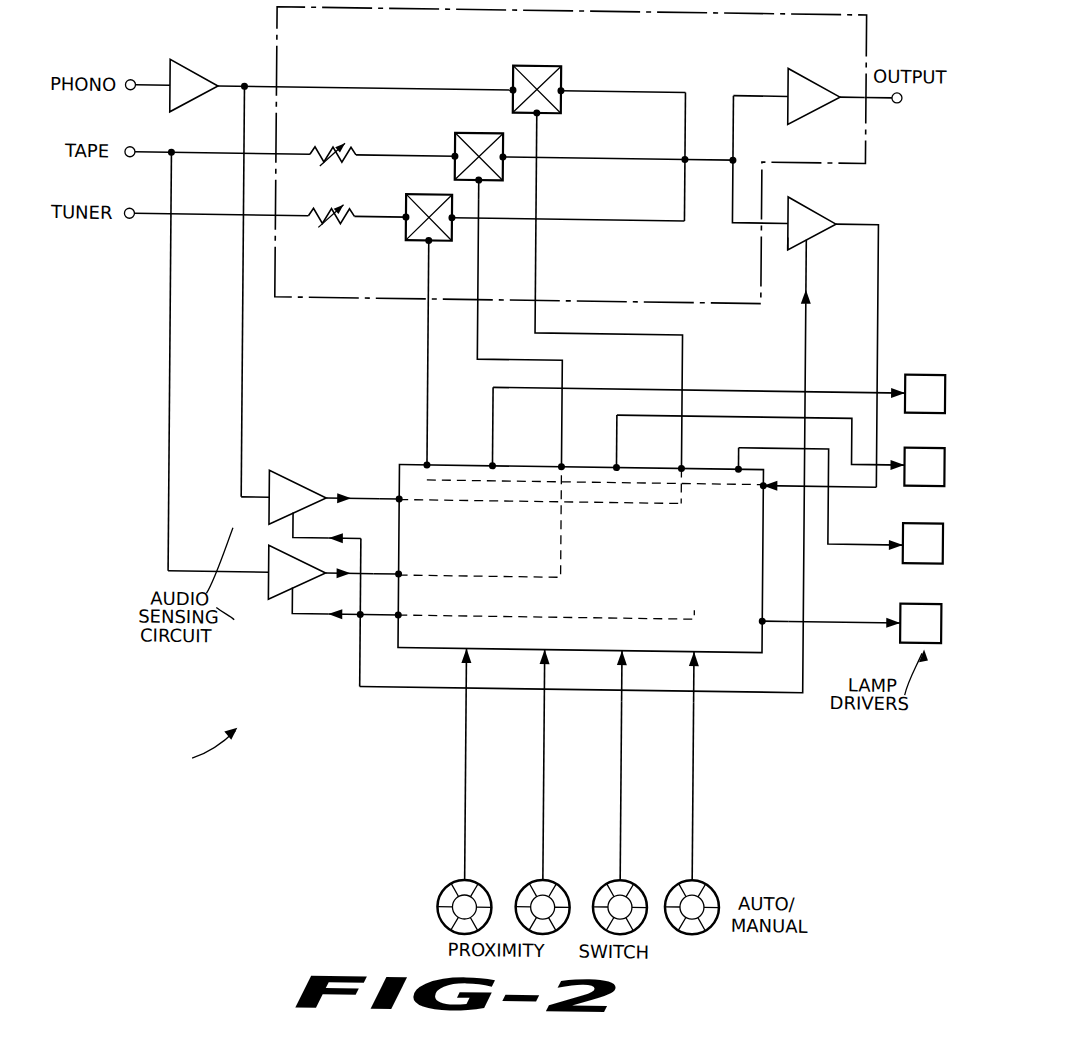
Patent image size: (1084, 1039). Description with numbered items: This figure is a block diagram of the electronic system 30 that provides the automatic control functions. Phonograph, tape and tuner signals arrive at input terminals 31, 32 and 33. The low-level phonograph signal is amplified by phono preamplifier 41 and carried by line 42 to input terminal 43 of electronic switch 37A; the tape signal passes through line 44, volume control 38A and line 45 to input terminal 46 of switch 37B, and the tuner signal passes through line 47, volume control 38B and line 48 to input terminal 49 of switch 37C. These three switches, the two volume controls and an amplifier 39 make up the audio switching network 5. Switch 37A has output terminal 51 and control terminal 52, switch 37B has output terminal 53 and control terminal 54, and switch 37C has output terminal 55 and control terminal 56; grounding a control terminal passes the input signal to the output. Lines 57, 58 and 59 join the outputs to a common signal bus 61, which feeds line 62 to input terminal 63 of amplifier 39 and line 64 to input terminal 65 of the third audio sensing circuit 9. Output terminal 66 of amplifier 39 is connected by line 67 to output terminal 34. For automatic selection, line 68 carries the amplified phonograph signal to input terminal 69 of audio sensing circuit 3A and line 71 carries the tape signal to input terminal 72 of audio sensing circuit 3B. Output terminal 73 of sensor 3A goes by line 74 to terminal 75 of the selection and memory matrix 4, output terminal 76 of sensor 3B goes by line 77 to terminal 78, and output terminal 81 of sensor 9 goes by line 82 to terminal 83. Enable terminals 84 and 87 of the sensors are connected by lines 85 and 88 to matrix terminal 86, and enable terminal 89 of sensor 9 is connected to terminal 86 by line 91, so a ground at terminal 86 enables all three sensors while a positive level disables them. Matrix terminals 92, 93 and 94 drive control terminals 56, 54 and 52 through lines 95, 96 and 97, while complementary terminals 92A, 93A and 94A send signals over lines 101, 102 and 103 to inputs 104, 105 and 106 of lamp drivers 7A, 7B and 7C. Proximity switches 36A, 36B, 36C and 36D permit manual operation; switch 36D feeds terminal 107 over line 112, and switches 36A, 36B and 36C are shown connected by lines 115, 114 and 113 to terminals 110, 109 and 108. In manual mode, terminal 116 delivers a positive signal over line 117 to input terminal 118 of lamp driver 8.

The electronic system 30 is at (198, 749).
The PHONO input terminal 31 is at (131, 86).
The TAPE input terminal 32 is at (146, 146).
The TUNER input terminal 33 is at (146, 202).
The output terminal 34 is at (896, 98).
The audio sensing circuit 3A is at (268, 519).
The audio sensing circuit 3B is at (269, 602).
The selection and memory matrix 4 is at (734, 505).
The audio switching network 5 is at (316, 44).
The third audio sensing circuit 9 is at (867, 176).
The proximity switch 36A is at (488, 889).
The proximity switch 36B is at (565, 888).
The proximity switch 36C is at (642, 887).
The proximity switch 36D is at (714, 886).
The electronic switch 37A is at (552, 66).
The electronic switch 37B is at (495, 124).
The electronic switch 37C is at (440, 190).
The volume control 38A is at (318, 152).
The volume control 38B is at (318, 212).
The amplifier 39 is at (818, 82).
The phono preamplifier 41 is at (192, 77).
The line 42 is at (396, 90).
The input terminal 43 is at (509, 88).
The line 44 is at (221, 144).
The line 45 is at (388, 157).
The input terminal 46 is at (452, 157).
The line 47 is at (212, 218).
The line 48 is at (388, 218).
The input terminal 49 is at (404, 220).
The output terminal 51 is at (560, 88).
The control terminal 52 is at (553, 205).
The output terminal 53 is at (501, 160).
The control terminal 54 is at (478, 183).
The output terminal 55 is at (452, 222).
The control terminal 56 is at (427, 243).
The line 57 is at (683, 132).
The line 58 is at (618, 157).
The line 59 is at (622, 219).
The common signal bus 61 is at (729, 160).
The line 62 is at (750, 93).
The input terminal 63 is at (785, 93).
The line 64 is at (750, 222).
The input terminal 65 is at (786, 240).
The output terminal 66 is at (850, 93).
The line 67 is at (877, 96).
The line 68 is at (246, 340).
The input terminal 69 is at (268, 499).
The line 71 is at (171, 322).
The input terminal 72 is at (264, 577).
The output terminal 73 is at (327, 499).
The line 74 is at (362, 499).
The terminal 75 is at (398, 499).
The output terminal 76 is at (333, 576).
The line 77 is at (352, 578).
The terminal 78 is at (398, 576).
The output terminal 81 is at (833, 217).
The line 82 is at (878, 275).
The terminal 83 is at (766, 487).
The enable terminal 84 is at (294, 516).
The line 85 is at (363, 541).
The terminal 86 is at (399, 618).
The enable terminal 87 is at (294, 614).
The line 88 is at (322, 618).
The enable terminal 89 is at (806, 247).
The line 91 is at (806, 682).
The terminal 92 is at (427, 466).
The complementary terminal 92A is at (493, 466).
The terminal 93 is at (562, 466).
The complementary terminal 93A is at (617, 466).
The terminal 94 is at (683, 466).
The complementary terminal 94A is at (739, 466).
The line 95 is at (428, 340).
The control line 96 is at (478, 340).
The line 97 is at (535, 322).
The line 101 is at (793, 388).
The line 102 is at (795, 414).
The line 103 is at (797, 445).
The input terminal 104 is at (916, 382).
The input 105 is at (913, 455).
The input 106 is at (912, 531).
The lamp driver 7A is at (936, 399).
The lamp driver 7B is at (936, 472).
The lamp driver 7C is at (935, 548).
The lamp driver 8 is at (929, 628).
The terminal 107 is at (696, 650).
The matrix input 108 is at (624, 650).
The matrix input 109 is at (547, 650).
The matrix input 110 is at (469, 650).
The line 112 is at (696, 725).
The conductor 113 is at (624, 726).
The conductor 114 is at (547, 727).
The conductor 115 is at (468, 728).
The terminal 116 is at (765, 620).
The line 117 is at (862, 618).
The input terminal 118 is at (910, 612).